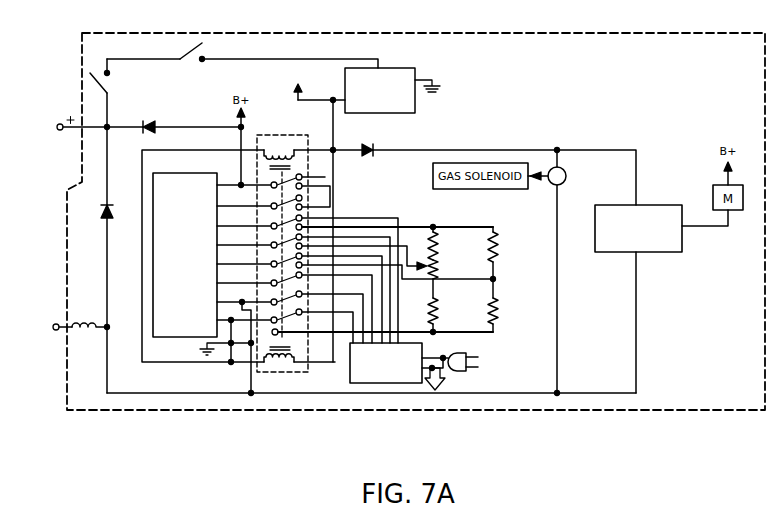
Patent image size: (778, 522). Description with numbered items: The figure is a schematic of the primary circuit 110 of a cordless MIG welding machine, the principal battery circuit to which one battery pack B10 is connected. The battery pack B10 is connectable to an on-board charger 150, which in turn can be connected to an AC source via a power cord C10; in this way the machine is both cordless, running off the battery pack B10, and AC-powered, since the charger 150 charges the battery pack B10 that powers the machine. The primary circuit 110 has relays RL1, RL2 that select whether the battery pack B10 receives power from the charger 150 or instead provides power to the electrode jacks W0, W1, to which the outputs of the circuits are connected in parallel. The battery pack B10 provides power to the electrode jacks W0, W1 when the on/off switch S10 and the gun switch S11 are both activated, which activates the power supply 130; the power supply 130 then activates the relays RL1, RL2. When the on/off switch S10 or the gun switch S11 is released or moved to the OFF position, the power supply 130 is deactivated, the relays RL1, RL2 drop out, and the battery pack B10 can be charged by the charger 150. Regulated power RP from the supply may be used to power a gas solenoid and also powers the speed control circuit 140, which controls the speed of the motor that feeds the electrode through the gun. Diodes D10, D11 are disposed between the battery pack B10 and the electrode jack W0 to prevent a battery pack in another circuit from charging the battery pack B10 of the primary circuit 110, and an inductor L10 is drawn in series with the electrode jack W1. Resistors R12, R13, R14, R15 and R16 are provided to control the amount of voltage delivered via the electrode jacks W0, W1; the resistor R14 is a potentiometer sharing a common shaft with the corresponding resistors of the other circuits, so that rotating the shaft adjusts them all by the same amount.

The primary circuit 110 is at (375, 414).
The power supply 130 is at (371, 108).
The speed control circuit 140 is at (629, 247).
The charger 150 is at (377, 380).
The electrode jack W0 is at (57, 127).
The electrode jack W1 is at (53, 327).
The on/off switch S10 is at (112, 84).
The gun switch S11 is at (242, 68).
The diode D10 is at (150, 121).
The diode D11 is at (103, 214).
The inductor L10 is at (98, 322).
The regulated power RP is at (317, 85).
The relay RL1 is at (265, 133).
The relay RL2 is at (288, 372).
The battery pack B10 is at (189, 264).
The resistor R12 is at (444, 236).
The resistor R13 is at (498, 242).
The resistor R14 is at (439, 270).
The resistor R15 is at (438, 309).
The resistor R16 is at (498, 310).
The power cord C10 is at (457, 353).